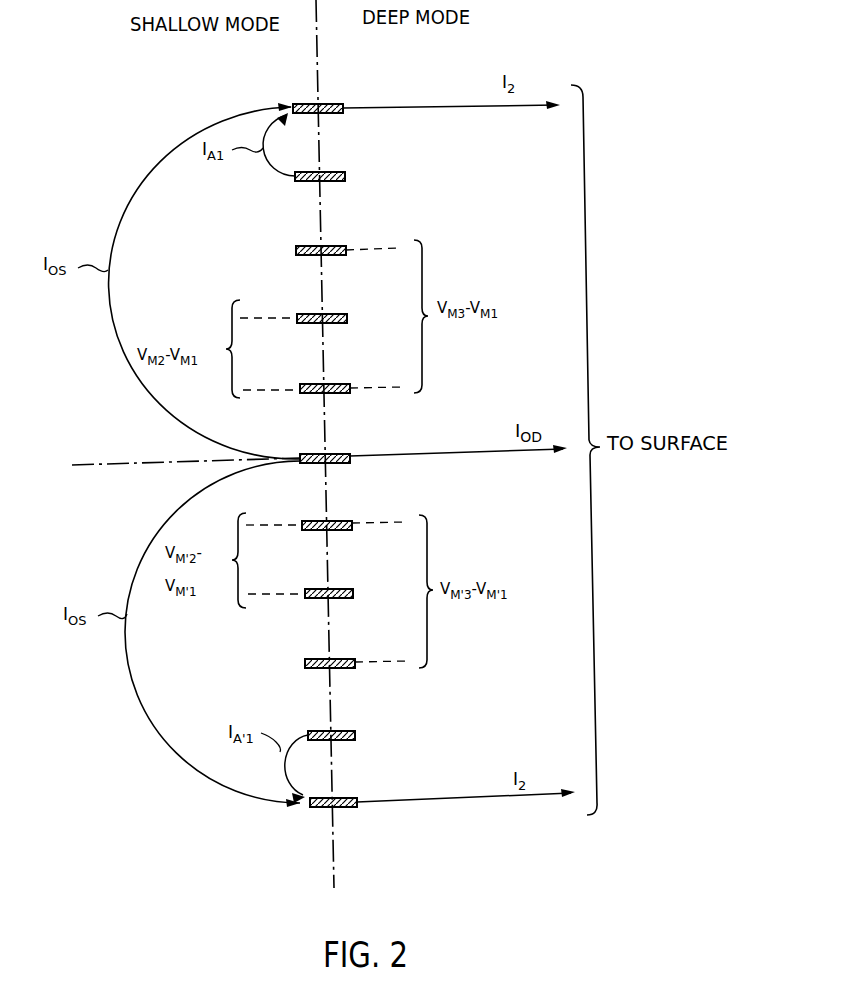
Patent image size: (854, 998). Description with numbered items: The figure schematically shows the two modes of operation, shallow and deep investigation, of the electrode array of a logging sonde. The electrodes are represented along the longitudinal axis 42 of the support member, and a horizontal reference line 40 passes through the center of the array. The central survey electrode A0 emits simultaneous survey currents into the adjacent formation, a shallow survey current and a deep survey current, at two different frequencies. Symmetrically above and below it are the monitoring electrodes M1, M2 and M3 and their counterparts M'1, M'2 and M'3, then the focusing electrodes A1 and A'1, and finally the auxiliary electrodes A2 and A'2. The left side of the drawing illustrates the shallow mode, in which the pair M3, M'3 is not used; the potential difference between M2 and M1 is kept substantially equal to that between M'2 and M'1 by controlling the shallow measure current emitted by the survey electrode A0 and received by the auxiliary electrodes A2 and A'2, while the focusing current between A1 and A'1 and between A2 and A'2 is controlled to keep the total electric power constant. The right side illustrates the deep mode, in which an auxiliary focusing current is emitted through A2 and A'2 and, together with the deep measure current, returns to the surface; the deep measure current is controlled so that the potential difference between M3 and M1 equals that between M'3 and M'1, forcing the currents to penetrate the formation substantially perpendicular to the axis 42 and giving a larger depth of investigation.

The horizontal reference plane through current electrode A0 40 is at (145, 462).
The longitudinal axis 42 is at (336, 848).
The auxiliary electrode A2 is at (328, 96).
The focusing electrode A1 is at (330, 165).
The monitoring electrode M3 is at (330, 237).
The monitoring electrode M2 is at (331, 305).
The monitoring electrode M1 is at (335, 375).
The survey electrode A0 is at (333, 443).
The monitoring electrode M'1 is at (340, 512).
The monitoring electrode M'2 is at (342, 580).
The monitoring electrode M'3 is at (342, 650).
The focusing electrode A'1 is at (344, 722).
The auxiliary electrode A'2 is at (345, 789).